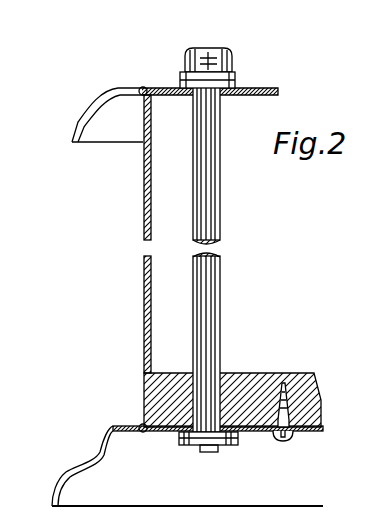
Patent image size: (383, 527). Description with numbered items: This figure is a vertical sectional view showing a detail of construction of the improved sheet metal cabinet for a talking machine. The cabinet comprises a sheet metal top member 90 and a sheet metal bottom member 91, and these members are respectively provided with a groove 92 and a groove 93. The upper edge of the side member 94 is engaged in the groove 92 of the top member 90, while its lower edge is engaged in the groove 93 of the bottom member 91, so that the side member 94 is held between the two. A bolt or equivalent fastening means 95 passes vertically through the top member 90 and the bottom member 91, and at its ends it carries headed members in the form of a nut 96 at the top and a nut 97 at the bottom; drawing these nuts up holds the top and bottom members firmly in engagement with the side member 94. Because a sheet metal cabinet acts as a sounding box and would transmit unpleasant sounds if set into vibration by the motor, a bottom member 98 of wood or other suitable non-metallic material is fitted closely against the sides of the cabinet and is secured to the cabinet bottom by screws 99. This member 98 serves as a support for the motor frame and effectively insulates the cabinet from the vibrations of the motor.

The top member 90 is at (78, 126).
The bottom member 91 is at (62, 470).
The groove 92 is at (140, 98).
The groove 93 is at (143, 424).
The side member 94 is at (143, 321).
The bolt 95 is at (220, 291).
The nut 96 is at (233, 58).
The nut 97 is at (234, 440).
The bottom member 98 is at (318, 369).
The screw 99 is at (293, 439).